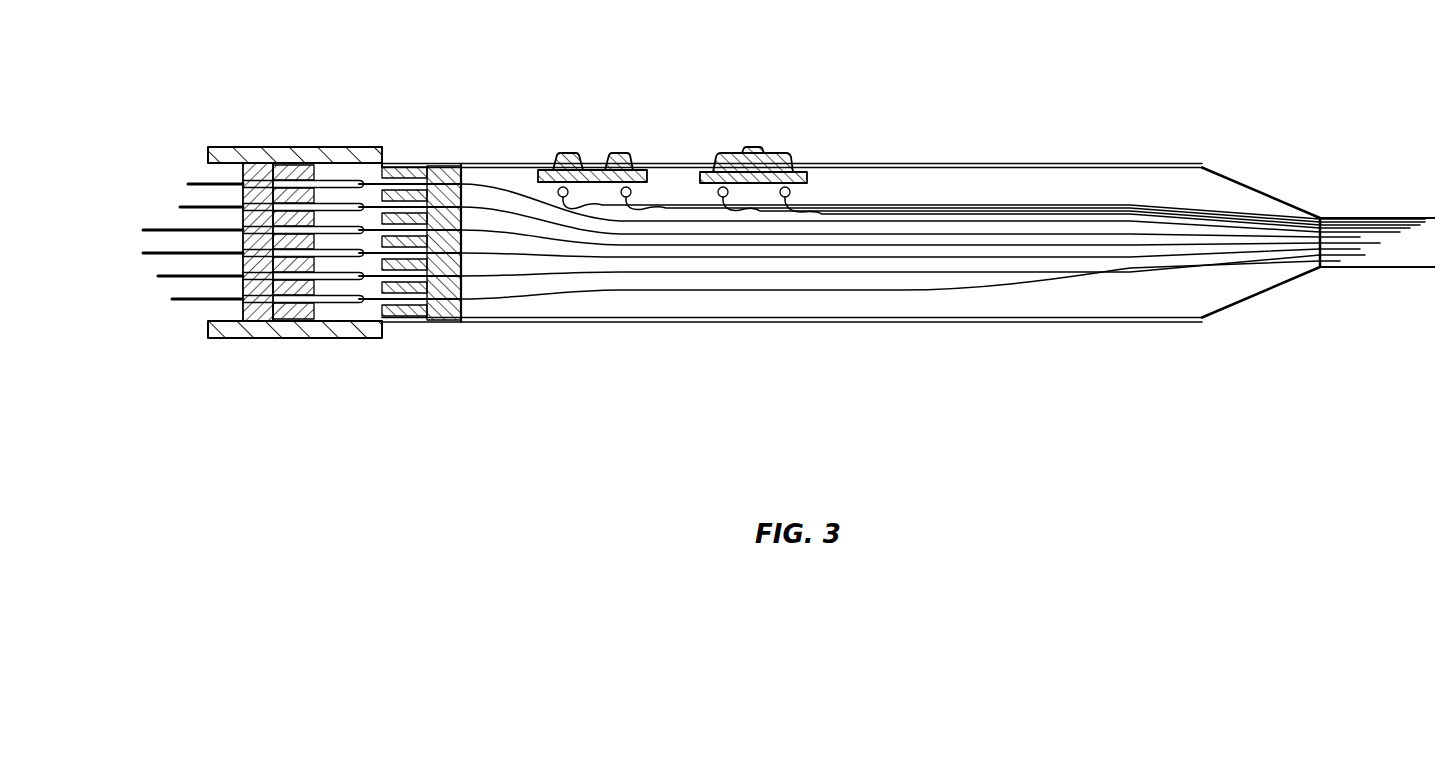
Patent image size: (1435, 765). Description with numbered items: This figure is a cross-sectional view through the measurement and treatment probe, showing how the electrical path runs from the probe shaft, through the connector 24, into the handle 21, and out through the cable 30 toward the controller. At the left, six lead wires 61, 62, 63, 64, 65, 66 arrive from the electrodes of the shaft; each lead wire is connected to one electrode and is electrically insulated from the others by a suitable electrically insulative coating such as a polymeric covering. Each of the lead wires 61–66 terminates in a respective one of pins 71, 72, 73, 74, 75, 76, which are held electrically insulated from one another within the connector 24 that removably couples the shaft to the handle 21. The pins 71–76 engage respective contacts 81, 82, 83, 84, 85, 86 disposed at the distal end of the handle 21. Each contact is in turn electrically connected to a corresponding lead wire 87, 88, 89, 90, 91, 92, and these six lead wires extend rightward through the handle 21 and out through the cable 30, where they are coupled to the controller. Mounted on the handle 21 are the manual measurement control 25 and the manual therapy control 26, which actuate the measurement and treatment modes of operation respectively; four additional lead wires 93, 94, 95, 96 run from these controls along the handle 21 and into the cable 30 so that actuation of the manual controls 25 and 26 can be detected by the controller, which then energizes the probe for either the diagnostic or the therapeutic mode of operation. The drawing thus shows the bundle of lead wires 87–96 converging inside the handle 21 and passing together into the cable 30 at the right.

The handle 21 is at (888, 163).
The connector 24 is at (312, 148).
The manual measurement control 25 is at (618, 153).
The manual therapy control 26 is at (750, 147).
The cable 30 is at (1390, 217).
The lead wire 61 is at (188, 183).
The lead wire 62 is at (180, 207).
The lead wire 63 is at (158, 230).
The lead wire 64 is at (172, 300).
The lead wire 65 is at (158, 277).
The lead wire 66 is at (143, 254).
The pin 71 is at (345, 178).
The pin 72 is at (352, 203).
The pin 73 is at (396, 196).
The pin 74 is at (393, 330).
The pin 75 is at (358, 320).
The pin 76 is at (333, 320).
The contact 81 is at (462, 205).
The contact 82 is at (464, 222).
The contact 83 is at (466, 245).
The contact 84 is at (478, 300).
The contact 85 is at (466, 300).
The contact 86 is at (446, 318).
The lead wire 87 is at (1203, 232).
The lead wire 88 is at (1150, 241).
The lead wire 89 is at (1127, 168).
The lead wire 90 is at (998, 258).
The lead wire 91 is at (943, 273).
The lead wire 92 is at (893, 288).
The additional lead wire 93 is at (602, 205).
The additional lead wire 94 is at (666, 208).
The additional lead wire 95 is at (744, 207).
The additional lead wire 96 is at (814, 208).